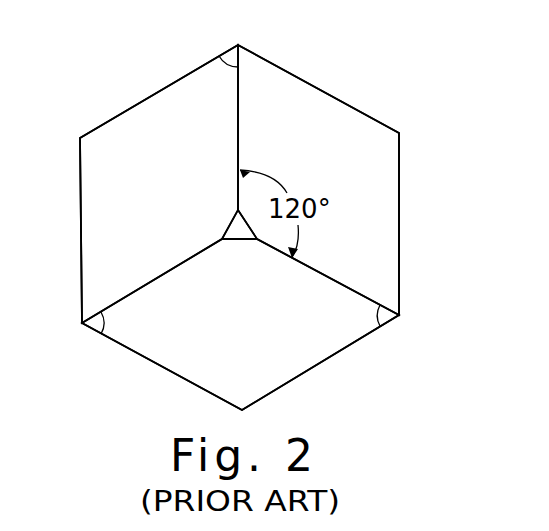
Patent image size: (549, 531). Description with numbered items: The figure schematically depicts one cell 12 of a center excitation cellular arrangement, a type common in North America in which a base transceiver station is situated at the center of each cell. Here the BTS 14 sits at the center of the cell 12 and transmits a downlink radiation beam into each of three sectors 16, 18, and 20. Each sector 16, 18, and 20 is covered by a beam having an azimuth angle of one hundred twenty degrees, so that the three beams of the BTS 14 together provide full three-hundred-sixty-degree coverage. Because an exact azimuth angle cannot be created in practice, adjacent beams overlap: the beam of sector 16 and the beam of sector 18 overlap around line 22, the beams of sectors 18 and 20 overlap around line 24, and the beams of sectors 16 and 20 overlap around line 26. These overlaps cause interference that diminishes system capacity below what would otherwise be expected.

The cell 12 is at (325, 92).
The BTS 14 is at (222, 239).
The sector 16 is at (185, 177).
The sector 18 is at (348, 164).
The sector 20 is at (263, 318).
The line 22 is at (226, 52).
The line 24 is at (374, 335).
The line 26 is at (103, 335).